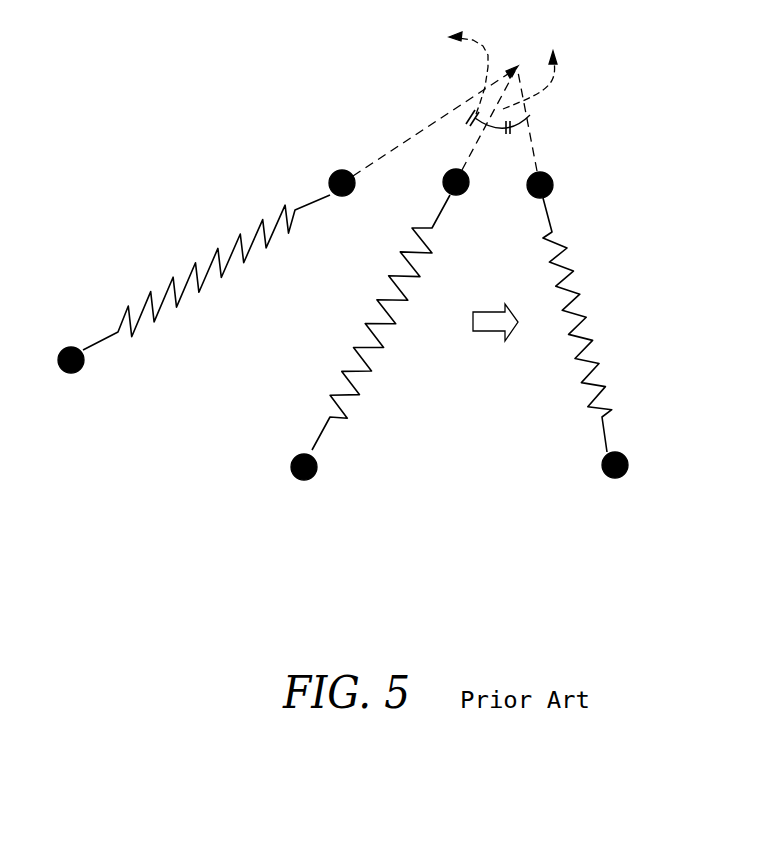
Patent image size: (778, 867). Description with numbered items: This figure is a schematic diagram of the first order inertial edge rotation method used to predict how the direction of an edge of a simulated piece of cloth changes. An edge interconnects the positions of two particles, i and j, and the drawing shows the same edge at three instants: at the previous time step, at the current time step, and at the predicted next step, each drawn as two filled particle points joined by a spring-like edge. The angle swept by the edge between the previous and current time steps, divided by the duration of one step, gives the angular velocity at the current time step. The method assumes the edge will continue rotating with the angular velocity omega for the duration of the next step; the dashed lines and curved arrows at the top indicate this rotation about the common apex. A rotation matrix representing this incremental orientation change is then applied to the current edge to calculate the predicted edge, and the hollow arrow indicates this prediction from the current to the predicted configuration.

The angular velocity at time step n+1 omega is at (534, 65).